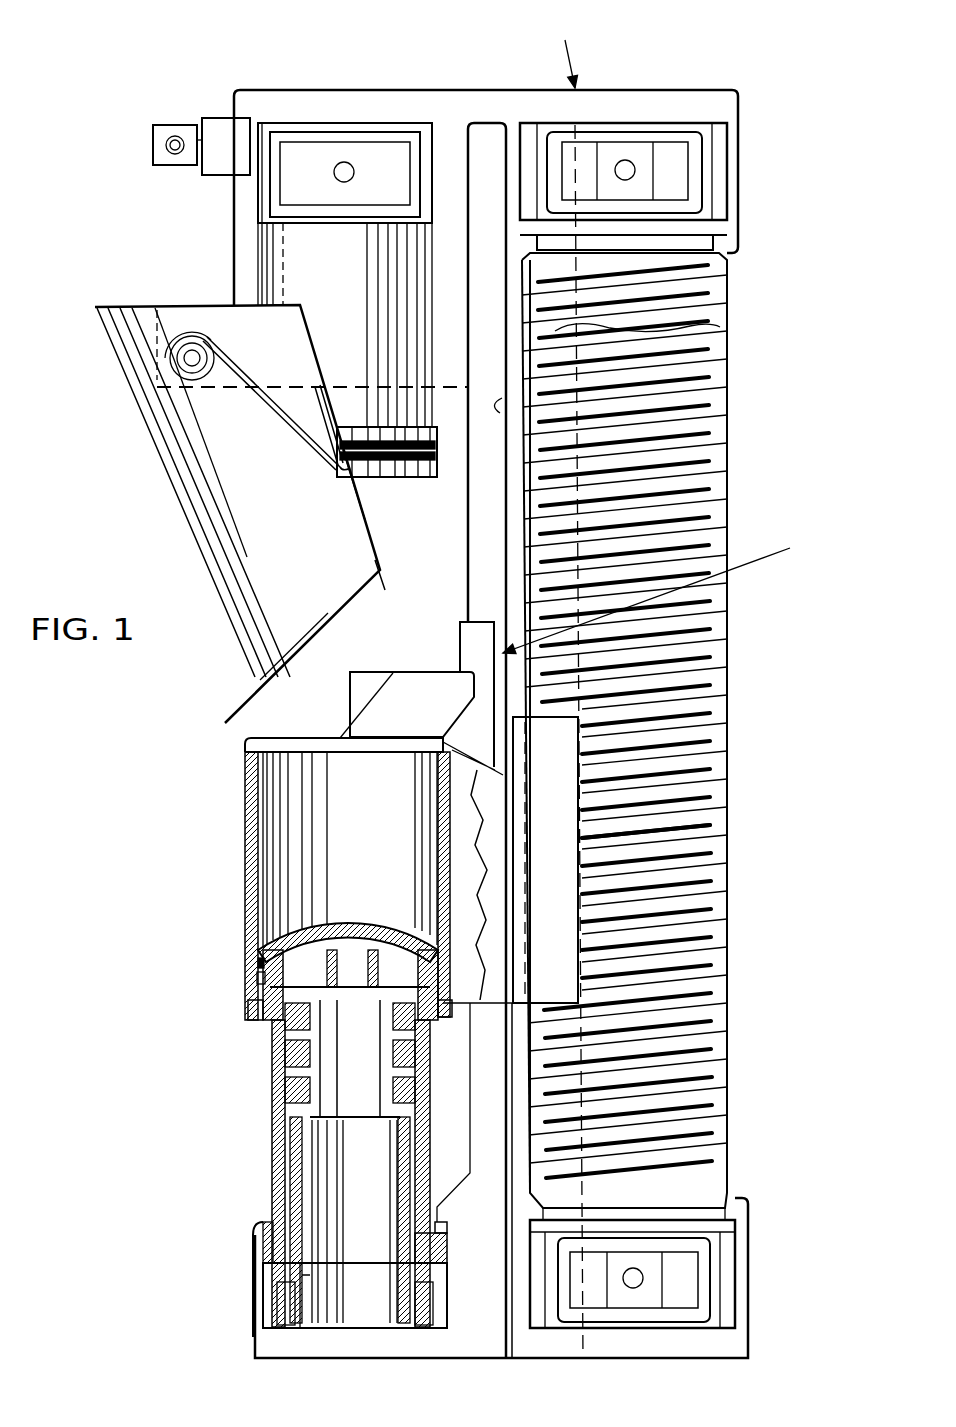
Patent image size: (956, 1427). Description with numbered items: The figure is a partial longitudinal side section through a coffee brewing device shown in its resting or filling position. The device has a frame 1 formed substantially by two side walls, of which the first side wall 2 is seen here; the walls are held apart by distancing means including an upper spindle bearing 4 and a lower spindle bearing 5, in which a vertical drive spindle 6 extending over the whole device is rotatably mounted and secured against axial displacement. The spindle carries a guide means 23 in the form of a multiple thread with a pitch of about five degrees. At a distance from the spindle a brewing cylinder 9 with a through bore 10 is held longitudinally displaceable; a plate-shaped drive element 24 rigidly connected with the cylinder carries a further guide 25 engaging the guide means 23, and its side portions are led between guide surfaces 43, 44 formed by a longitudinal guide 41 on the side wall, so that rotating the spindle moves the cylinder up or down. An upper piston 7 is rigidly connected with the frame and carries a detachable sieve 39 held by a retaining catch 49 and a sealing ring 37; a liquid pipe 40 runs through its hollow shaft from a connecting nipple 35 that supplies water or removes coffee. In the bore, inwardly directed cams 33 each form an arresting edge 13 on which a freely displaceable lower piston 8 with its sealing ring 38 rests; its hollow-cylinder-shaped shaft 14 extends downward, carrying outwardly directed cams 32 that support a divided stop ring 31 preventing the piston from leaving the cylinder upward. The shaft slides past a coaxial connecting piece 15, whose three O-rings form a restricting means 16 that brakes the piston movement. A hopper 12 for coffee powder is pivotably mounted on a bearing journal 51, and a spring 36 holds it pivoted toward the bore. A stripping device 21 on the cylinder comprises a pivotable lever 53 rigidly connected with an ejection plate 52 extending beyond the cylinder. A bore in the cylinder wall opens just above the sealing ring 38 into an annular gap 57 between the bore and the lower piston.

The frame 1 is at (566, 49).
The first side wall 2 is at (393, 100).
The upper spindle bearing 4 is at (713, 172).
The lower spindle bearing 5 is at (750, 1285).
The drive spindle 6 is at (727, 466).
The upper piston 7 is at (240, 220).
The lower piston 8 is at (253, 980).
The brewing cylinder 9 is at (252, 858).
The through bore 10 is at (300, 805).
The hopper 12 is at (187, 473).
The arresting edge 13 is at (247, 1017).
The hollow-cylinder-shaped shaft 14 is at (275, 1170).
The connecting piece 15 is at (270, 1240).
The restricting means 16 is at (290, 1110).
The stripping device 21 is at (667, 592).
The guide means 23 is at (700, 848).
The drive element 24 is at (674, 850).
The further guide 25 is at (570, 790).
The divided stop ring 31 is at (447, 1228).
The outwardly directed cams 32 is at (430, 1258).
The inwardly directed cams 33 is at (290, 1055).
The connecting nipple 35 is at (222, 118).
The spring 36 is at (277, 413).
The sealing ring 37 is at (437, 450).
The sealing ring 38 is at (248, 965).
The detachable sieve 39 is at (380, 477).
The liquid pipe 40 is at (262, 268).
The longitudinal guide 41 is at (485, 145).
The guide surface 43 is at (502, 405).
The guide surface 44 is at (720, 327).
The retaining catch 49 is at (357, 492).
The bearing journal 51 is at (170, 365).
The ejection plate 52 is at (482, 717).
The lever 53 is at (423, 690).
The annular gap 57 is at (250, 940).